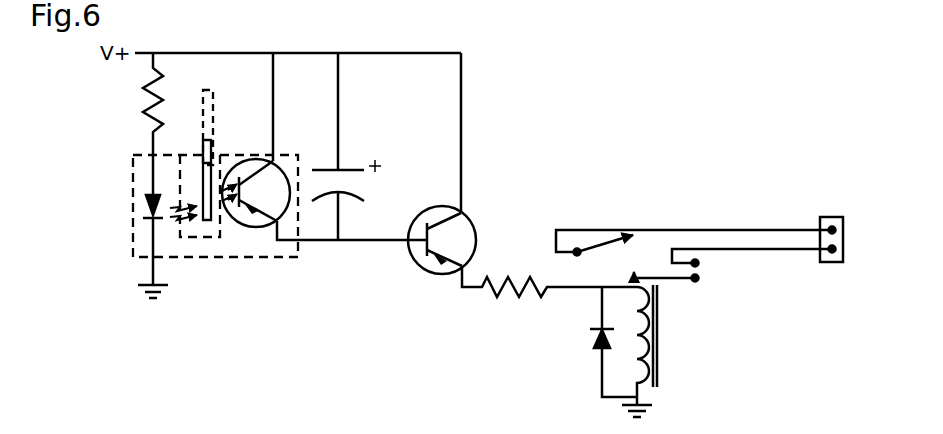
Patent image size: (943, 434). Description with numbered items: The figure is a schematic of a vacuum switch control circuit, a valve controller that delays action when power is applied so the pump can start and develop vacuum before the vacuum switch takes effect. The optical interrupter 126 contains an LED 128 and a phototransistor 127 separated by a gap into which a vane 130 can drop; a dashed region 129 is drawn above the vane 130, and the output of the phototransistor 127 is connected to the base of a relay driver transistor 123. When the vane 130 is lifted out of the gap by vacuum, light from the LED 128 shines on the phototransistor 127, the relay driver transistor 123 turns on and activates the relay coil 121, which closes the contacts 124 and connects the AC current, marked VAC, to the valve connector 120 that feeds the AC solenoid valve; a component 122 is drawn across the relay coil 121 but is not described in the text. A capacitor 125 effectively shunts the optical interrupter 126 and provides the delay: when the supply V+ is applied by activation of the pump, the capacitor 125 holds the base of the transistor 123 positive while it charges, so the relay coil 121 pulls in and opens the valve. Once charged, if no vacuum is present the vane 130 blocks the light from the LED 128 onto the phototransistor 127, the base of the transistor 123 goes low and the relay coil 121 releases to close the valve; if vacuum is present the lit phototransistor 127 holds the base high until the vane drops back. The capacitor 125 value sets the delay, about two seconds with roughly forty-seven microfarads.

The valve connector 120 is at (822, 217).
The relay coil 121 is at (663, 322).
The diode 122 is at (593, 347).
The relay driver transistor 123 is at (478, 232).
The contacts 124 is at (622, 252).
The capacitor 125 is at (357, 165).
The optical interrupter 126 is at (238, 258).
The phototransistor 127 is at (277, 170).
The LED 128 is at (147, 172).
The aperture 129 is at (216, 103).
The vane 130 is at (212, 150).